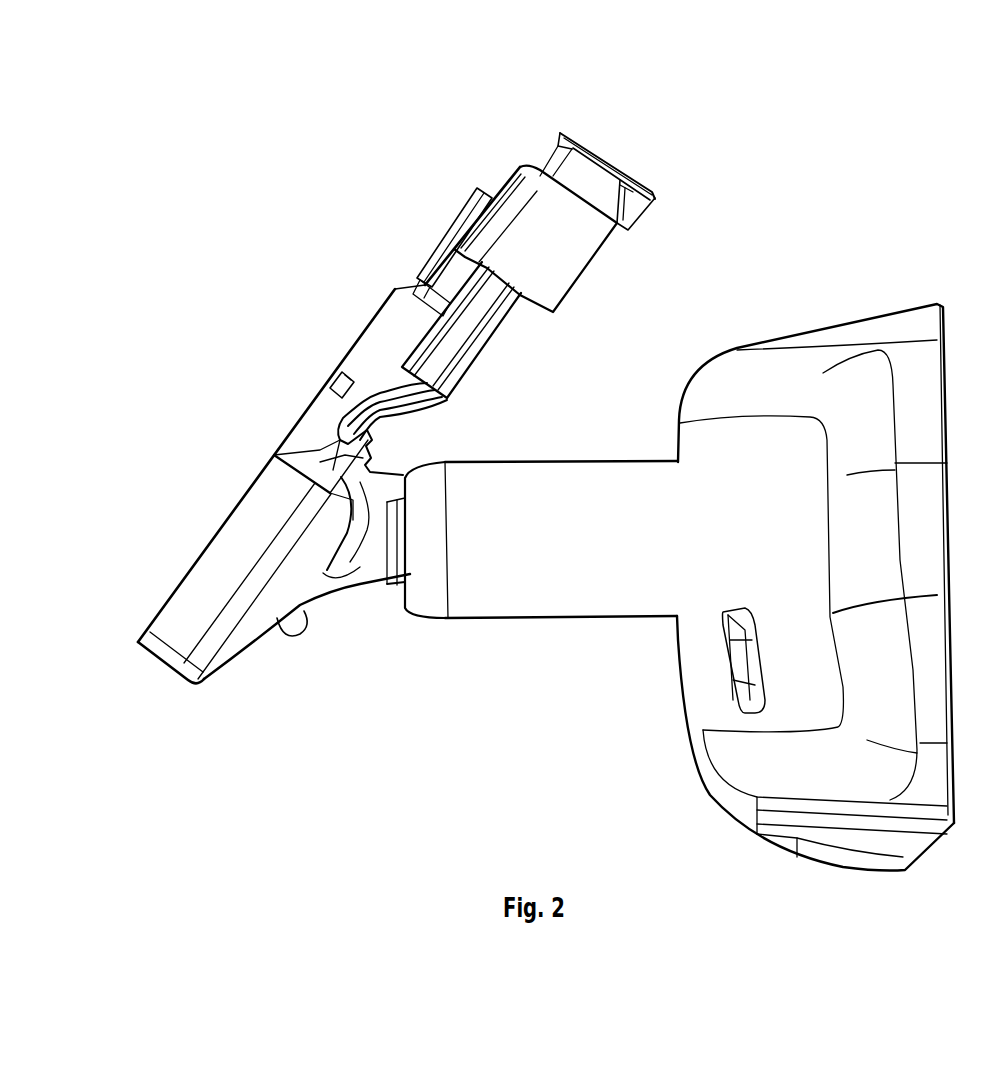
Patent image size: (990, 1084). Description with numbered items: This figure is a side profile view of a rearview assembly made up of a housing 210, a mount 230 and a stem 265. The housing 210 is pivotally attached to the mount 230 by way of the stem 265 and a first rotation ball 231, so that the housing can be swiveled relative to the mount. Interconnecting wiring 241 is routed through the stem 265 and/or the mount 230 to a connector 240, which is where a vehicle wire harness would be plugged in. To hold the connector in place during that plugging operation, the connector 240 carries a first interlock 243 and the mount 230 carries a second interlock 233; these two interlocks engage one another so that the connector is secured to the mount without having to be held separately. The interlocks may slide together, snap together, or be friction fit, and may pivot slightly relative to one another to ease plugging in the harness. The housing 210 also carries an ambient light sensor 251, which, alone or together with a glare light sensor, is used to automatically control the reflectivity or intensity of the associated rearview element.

The housing 210 is at (787, 372).
The mount 230 is at (203, 587).
The first rotation ball 231 is at (397, 577).
The second interlock 233 is at (413, 277).
The connector 240 is at (596, 176).
The interconnecting wiring 241 is at (391, 400).
The first interlock 243 is at (463, 260).
The ambient light sensor 251 is at (738, 660).
The stem 265 is at (565, 500).